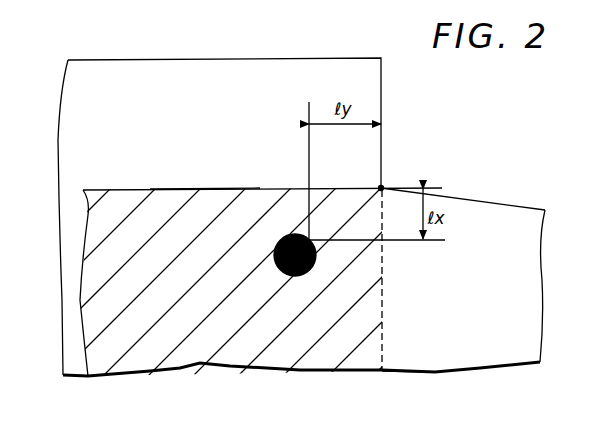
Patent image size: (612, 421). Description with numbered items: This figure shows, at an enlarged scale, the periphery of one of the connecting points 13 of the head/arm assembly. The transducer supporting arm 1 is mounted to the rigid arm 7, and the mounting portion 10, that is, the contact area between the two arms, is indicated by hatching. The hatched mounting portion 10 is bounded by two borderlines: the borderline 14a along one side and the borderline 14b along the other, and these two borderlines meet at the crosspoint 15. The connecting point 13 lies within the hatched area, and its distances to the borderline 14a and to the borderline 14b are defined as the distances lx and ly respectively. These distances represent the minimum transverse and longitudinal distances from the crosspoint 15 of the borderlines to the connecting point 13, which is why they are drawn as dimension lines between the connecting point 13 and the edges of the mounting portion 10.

The transducer supporting arm 1 is at (503, 203).
The rigid arm 7 is at (215, 70).
The mounting portion 10 is at (198, 349).
The connecting point 13 is at (297, 234).
The borderline 14a is at (197, 188).
The borderline 14b is at (382, 333).
The crosspoint 15 is at (381, 188).